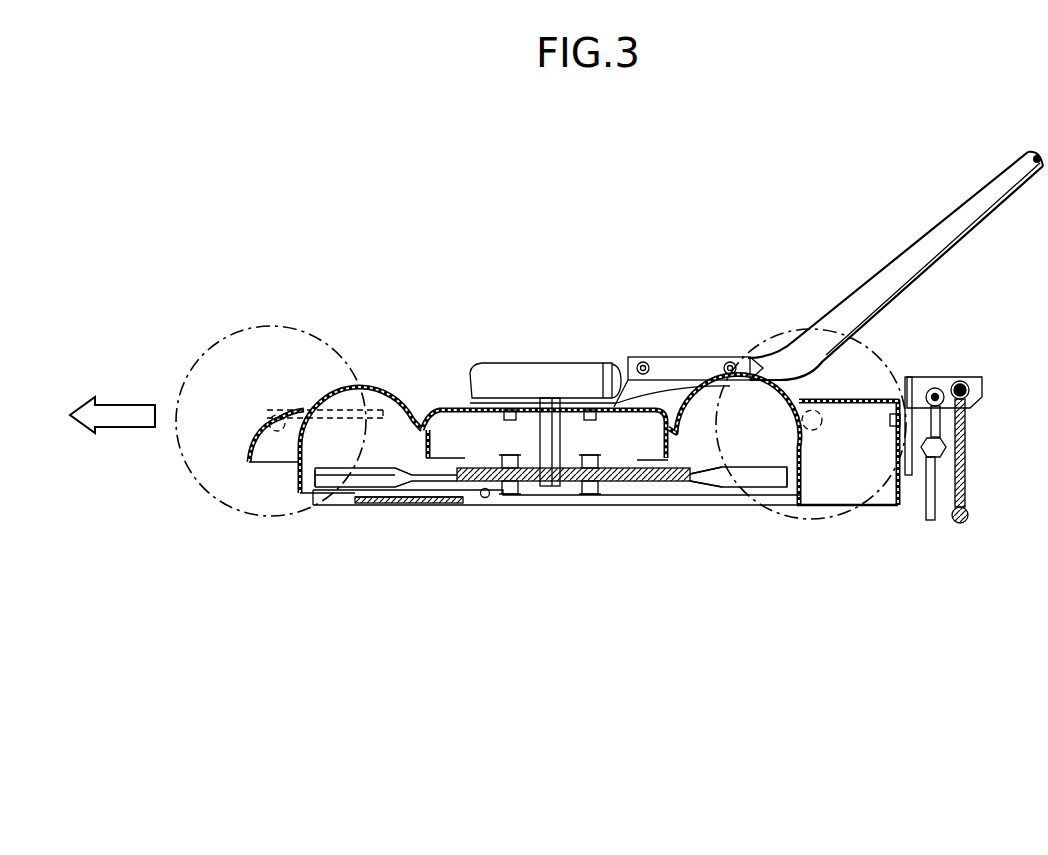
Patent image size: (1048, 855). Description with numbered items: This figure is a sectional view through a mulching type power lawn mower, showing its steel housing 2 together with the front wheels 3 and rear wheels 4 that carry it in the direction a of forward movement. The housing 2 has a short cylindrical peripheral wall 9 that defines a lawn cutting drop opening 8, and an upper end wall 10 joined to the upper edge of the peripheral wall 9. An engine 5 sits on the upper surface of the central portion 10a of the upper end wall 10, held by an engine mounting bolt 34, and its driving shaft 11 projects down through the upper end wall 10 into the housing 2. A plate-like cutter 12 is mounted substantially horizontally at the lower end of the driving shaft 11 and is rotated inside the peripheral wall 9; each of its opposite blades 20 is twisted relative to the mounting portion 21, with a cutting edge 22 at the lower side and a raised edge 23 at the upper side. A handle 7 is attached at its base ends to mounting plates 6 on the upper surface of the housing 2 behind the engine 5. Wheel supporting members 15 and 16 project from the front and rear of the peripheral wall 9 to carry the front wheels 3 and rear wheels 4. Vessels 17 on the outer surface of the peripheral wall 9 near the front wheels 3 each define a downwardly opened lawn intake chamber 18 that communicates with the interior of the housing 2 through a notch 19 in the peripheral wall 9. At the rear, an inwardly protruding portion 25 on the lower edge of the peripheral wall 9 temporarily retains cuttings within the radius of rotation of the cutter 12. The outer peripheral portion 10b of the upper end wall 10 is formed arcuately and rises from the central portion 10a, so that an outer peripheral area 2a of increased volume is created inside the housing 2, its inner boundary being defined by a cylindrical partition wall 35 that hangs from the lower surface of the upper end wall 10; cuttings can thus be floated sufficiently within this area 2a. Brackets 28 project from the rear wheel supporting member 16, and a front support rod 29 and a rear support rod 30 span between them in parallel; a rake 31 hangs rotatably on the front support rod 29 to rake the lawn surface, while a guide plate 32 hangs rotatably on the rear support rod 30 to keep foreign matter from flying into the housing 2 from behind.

The direction of forward movement a is at (128, 403).
The housing 2 is at (405, 378).
The outer peripheral area 2a is at (783, 457).
The front wheels 3 is at (266, 325).
The rear wheels 4 is at (790, 327).
The engine 5 is at (553, 375).
The mounting plates 6 is at (665, 387).
The handle 7 is at (957, 214).
The lawn cutting drop opening 8 is at (486, 499).
The peripheral wall 9 is at (800, 443).
The upper end wall 10 is at (464, 403).
The central portion 10a is at (633, 357).
The outer peripheral portion 10b is at (366, 392).
The driving shaft 11 is at (550, 416).
The cutter 12 is at (630, 484).
The front wheel supporting member 15 is at (296, 412).
The rear wheel supporting member 16 is at (843, 400).
The vessels 17 is at (420, 506).
The lawn intake chamber 18 is at (402, 505).
The notch 19 is at (443, 505).
The blades 20 is at (308, 487).
The mounting portion 21 is at (527, 483).
The cutting edge 22 is at (365, 440).
The raised edge 23 is at (382, 468).
The inwardly protruding portion 25 is at (798, 509).
The brackets 28 is at (921, 383).
The front support rod 29 is at (938, 390).
The rear support rod 30 is at (962, 382).
The rake 31 is at (923, 507).
The guide plate 32 is at (967, 457).
The engine mounting bolt 34 is at (510, 420).
The partition wall 35 is at (663, 461).